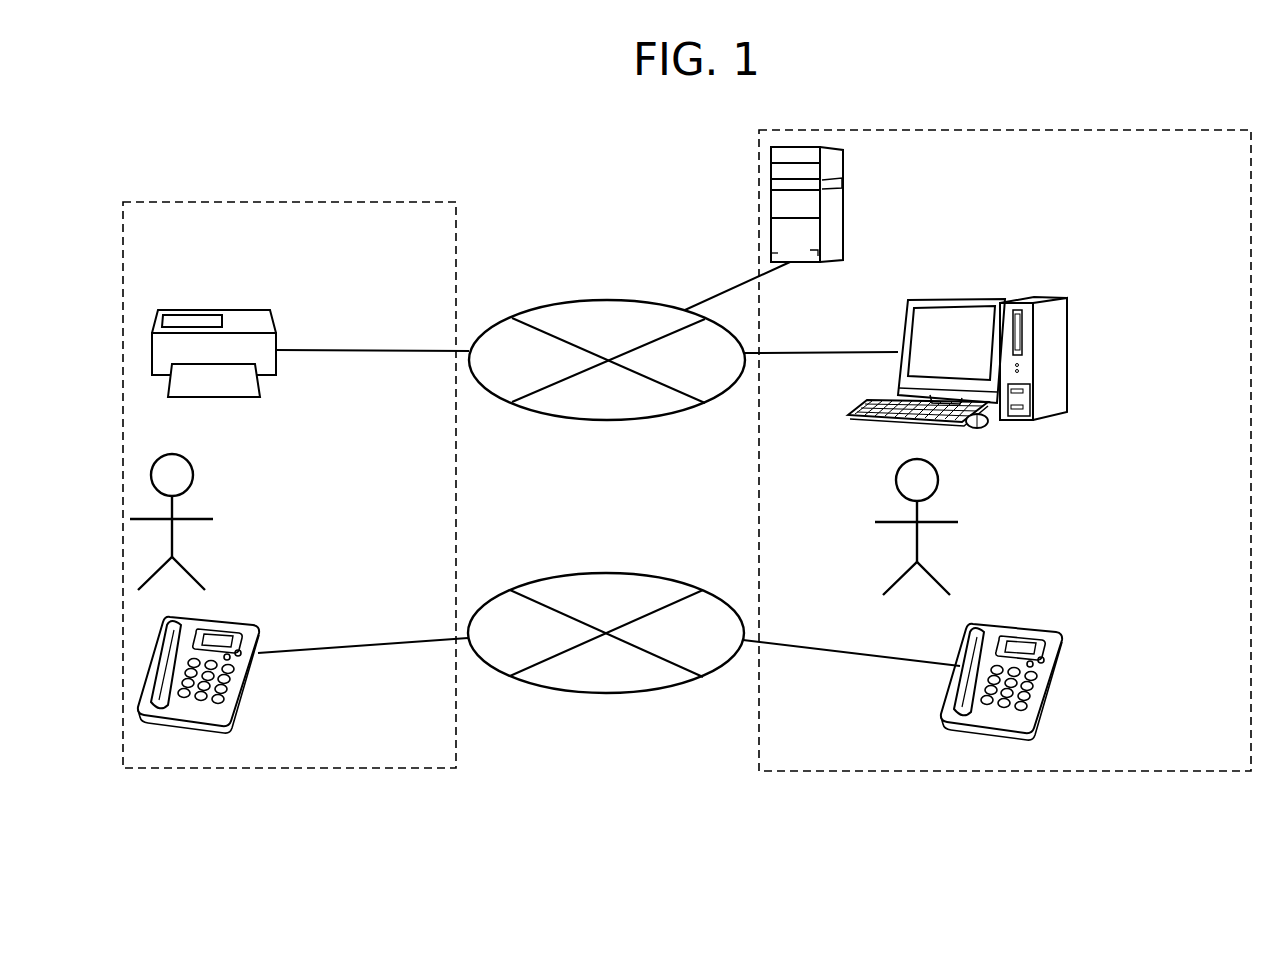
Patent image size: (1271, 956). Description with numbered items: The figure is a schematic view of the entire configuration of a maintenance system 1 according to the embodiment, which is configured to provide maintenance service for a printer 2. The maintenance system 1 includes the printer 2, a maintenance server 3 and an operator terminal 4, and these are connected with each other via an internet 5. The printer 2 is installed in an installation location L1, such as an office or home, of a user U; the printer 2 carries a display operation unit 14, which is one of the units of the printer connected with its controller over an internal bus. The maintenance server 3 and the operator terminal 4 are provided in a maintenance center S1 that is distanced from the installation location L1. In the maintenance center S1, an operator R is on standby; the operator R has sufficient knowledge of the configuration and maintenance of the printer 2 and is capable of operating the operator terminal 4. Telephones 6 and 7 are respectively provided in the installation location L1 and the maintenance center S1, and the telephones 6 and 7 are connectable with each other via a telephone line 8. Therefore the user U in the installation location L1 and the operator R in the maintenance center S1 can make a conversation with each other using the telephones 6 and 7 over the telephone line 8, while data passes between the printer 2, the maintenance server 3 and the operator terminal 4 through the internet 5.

The maintenance system 1 is at (159, 176).
The printer 2 is at (248, 308).
The display operation unit 14 is at (184, 322).
The maintenance server 3 is at (846, 197).
The operator terminal 4 is at (974, 299).
The internet 5 is at (563, 421).
The telephone 6 is at (250, 685).
The telephone 7 is at (1055, 692).
The telephone line 8 is at (550, 694).
The user U is at (193, 476).
The operator R is at (938, 480).
The installation location L1 is at (330, 770).
The maintenance center S1 is at (957, 772).